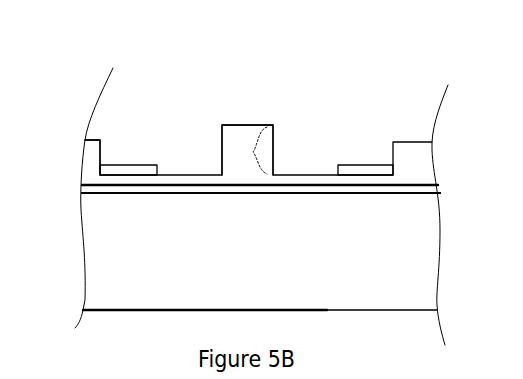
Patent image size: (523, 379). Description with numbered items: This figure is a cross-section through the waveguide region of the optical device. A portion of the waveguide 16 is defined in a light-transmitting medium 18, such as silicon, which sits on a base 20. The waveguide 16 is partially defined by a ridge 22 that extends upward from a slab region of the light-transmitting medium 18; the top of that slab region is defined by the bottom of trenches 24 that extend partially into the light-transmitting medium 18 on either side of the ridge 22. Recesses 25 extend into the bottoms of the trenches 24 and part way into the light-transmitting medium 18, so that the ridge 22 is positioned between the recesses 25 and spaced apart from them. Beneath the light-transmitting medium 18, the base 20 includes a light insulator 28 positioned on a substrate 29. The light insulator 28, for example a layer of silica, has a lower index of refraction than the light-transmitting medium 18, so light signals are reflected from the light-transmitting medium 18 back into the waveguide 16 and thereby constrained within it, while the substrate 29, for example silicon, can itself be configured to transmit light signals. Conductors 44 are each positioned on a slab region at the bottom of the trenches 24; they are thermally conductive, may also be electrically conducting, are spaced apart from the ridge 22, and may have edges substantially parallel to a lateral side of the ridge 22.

The waveguide 16 is at (247, 150).
The light-transmitting medium 18 is at (92, 153).
The base 20 is at (53, 183).
The ridge 22 is at (230, 125).
The trenches 24 is at (290, 110).
The recesses 25 is at (173, 176).
The light insulator 28 is at (190, 194).
The substrate 29 is at (371, 298).
The conductors 44 is at (140, 165).